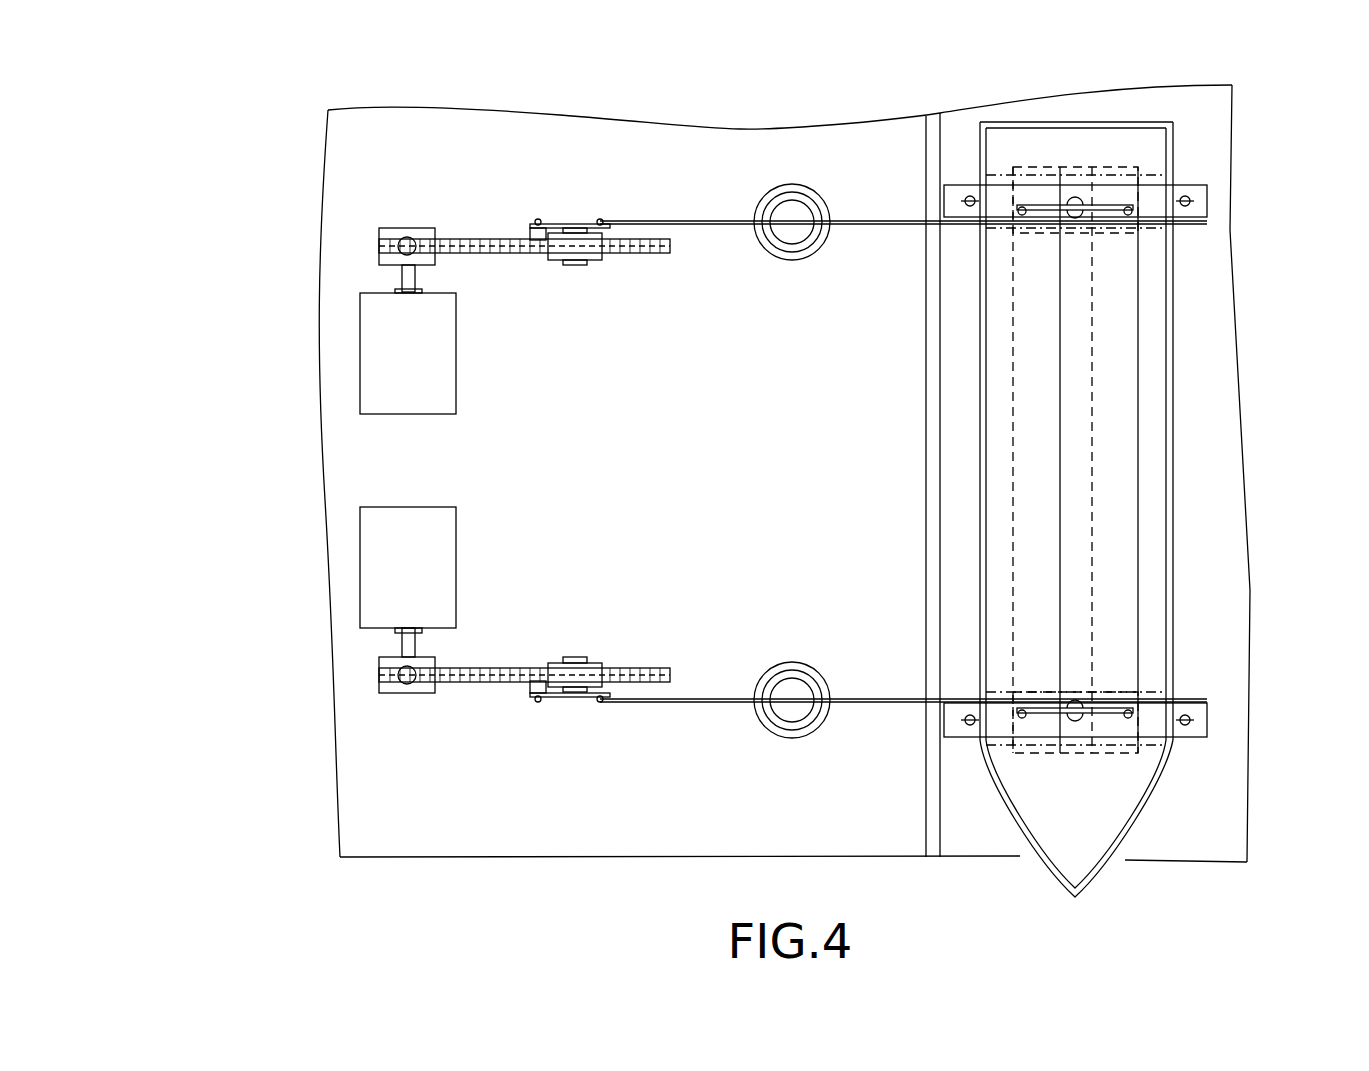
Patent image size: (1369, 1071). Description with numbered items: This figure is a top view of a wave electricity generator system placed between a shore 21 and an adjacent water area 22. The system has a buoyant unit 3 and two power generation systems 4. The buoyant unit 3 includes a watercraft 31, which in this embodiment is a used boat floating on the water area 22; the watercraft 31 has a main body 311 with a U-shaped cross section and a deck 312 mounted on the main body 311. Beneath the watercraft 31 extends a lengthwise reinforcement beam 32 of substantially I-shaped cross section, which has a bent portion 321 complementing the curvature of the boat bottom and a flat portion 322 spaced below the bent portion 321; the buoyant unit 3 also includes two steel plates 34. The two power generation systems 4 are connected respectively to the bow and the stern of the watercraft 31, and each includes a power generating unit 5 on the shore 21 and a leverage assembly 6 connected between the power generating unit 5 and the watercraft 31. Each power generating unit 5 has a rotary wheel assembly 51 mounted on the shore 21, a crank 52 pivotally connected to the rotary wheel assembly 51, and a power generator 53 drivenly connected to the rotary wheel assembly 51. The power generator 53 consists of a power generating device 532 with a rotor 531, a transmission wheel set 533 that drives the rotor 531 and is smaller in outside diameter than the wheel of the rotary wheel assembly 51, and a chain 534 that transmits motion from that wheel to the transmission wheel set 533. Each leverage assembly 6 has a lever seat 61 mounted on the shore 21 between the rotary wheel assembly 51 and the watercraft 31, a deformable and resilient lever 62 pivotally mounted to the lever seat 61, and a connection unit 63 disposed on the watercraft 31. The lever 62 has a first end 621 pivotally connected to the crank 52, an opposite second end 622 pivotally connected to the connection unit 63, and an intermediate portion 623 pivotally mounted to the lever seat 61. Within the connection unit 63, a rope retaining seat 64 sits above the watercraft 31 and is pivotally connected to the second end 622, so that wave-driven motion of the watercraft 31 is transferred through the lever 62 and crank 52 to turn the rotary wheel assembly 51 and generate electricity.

The shore 21 is at (598, 130).
The water area 22 is at (962, 125).
The buoyant unit 3 is at (1152, 471).
The watercraft 31 is at (1148, 509).
The main body 311 is at (1175, 428).
The deck 312 is at (1148, 303).
The reinforcement beam 32 is at (1169, 460).
The bent portion 321 is at (1140, 246).
The flat portion 322 is at (1125, 517).
The steel plates 34 is at (1147, 173).
The power generation system 4 is at (408, 476).
The power generating unit 5 is at (453, 476).
The rotary wheel assembly 51 is at (541, 264).
The crank 52 is at (568, 224).
The power generator 53 is at (346, 451).
The rotor 531 is at (408, 277).
The power generating device 532 is at (395, 358).
The transmission wheel set 533 is at (372, 243).
The chain 534 is at (470, 238).
The leverage assembly 6 is at (959, 441).
The lever seat 61 is at (797, 242).
The lever 62 is at (959, 482).
The first end 621 is at (622, 222).
The second end 622 is at (1075, 223).
The intermediate portion 623 is at (740, 220).
The connection unit 63 is at (1131, 447).
The rope retaining seat 64 is at (1202, 204).